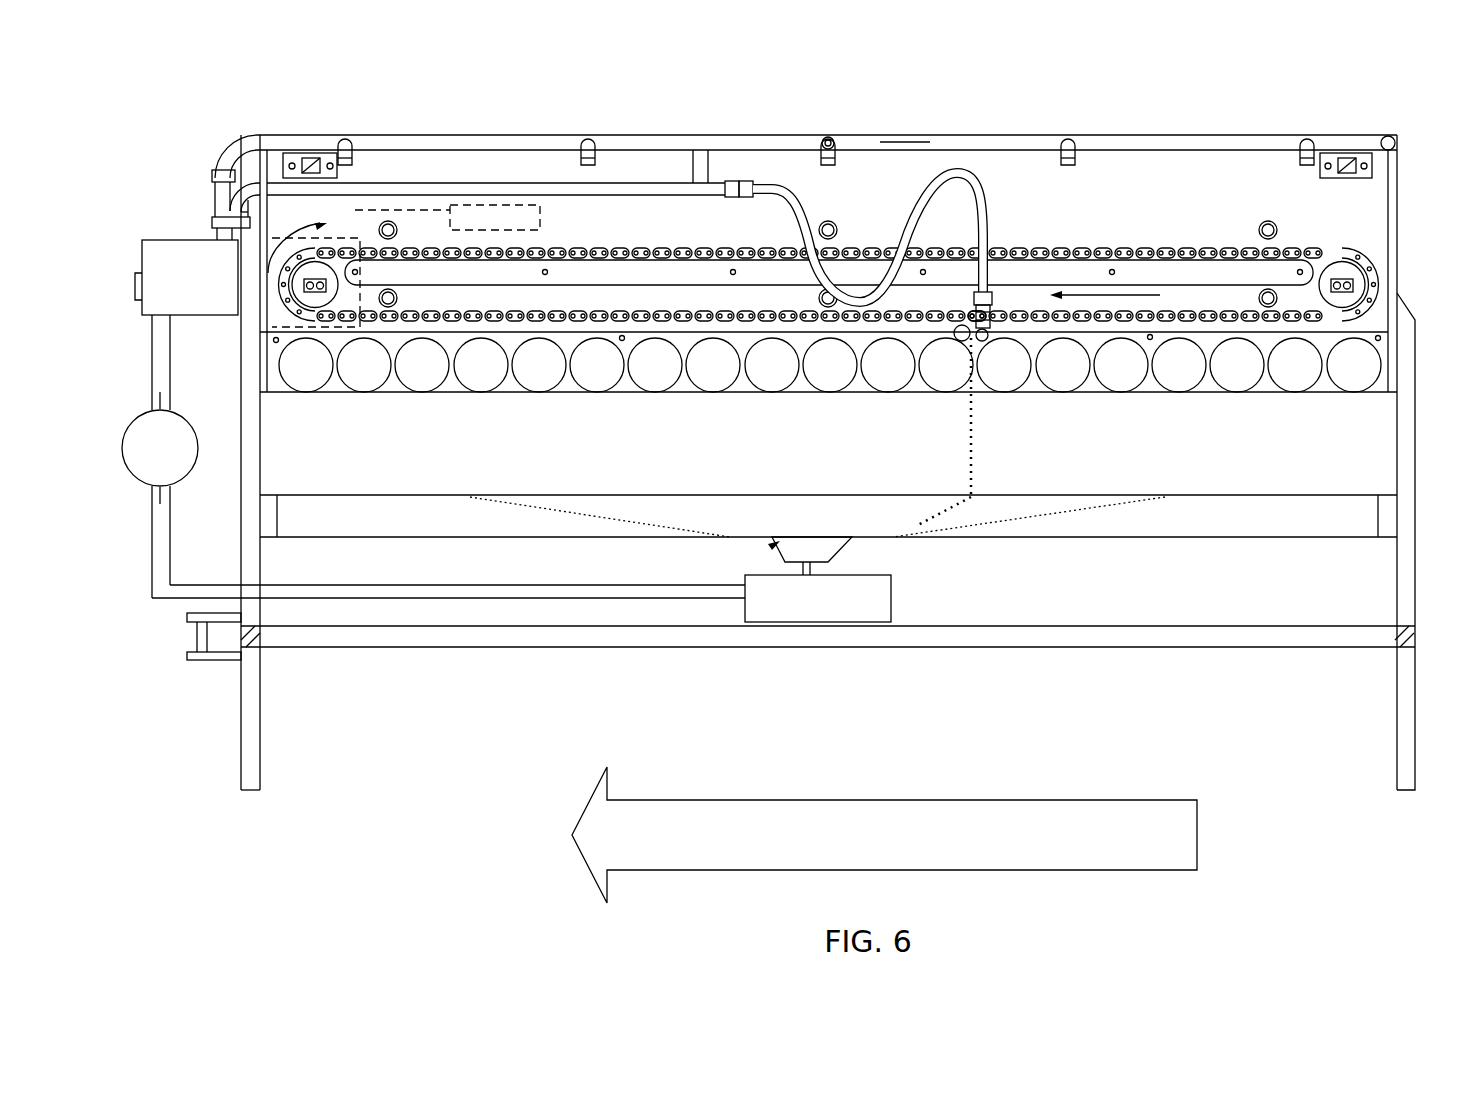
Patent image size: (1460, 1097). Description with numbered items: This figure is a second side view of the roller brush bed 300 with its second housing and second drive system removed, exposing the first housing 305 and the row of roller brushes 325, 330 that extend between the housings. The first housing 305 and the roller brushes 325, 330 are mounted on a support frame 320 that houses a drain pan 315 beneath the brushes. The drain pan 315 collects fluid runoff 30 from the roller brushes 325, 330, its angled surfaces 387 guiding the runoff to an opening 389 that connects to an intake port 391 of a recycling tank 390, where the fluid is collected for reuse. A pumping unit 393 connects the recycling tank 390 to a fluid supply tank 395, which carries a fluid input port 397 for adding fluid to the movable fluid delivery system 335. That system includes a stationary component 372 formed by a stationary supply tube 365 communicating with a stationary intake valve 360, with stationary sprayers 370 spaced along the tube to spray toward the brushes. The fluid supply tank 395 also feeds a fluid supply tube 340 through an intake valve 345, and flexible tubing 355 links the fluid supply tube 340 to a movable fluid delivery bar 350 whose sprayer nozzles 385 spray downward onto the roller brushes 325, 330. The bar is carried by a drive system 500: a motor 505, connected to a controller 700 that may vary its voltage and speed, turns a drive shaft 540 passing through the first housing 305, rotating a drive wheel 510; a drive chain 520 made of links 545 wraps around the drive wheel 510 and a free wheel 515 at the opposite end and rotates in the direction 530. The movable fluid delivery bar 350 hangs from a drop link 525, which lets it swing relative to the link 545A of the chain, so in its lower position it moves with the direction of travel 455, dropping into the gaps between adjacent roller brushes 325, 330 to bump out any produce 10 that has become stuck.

The roller brush bed 300 is at (262, 98).
The first housing 305 is at (690, 133).
The stationary supply tube 365 is at (470, 137).
The stationary component 372 is at (910, 136).
The stationary sprayers 370 is at (349, 158).
The fluid supply tube 340 is at (470, 183).
The drive system 500 is at (1230, 221).
The links 545 is at (530, 262).
The direction 530 is at (287, 227).
The drive shaft 540 is at (307, 287).
The drive wheel 510 is at (312, 300).
The drive chain 520 is at (1365, 292).
The free wheel 515 is at (1352, 294).
The motor 505 is at (293, 237).
The controller 700 is at (540, 222).
The flexible tubing 355 is at (913, 214).
The sprayer nozzles 385 is at (975, 306).
The movable fluid delivery bar 350 is at (988, 330).
The link 545A is at (992, 322).
The drop link 525 is at (986, 339).
The produce 10 is at (958, 338).
The fluid runoff 30 is at (982, 477).
The roller brushes 325 is at (306, 392).
The roller brushes 330 is at (364, 392).
The stationary intake valve 360 is at (214, 174).
The intake valve 345 is at (214, 228).
The movable fluid delivery system 335 is at (216, 126).
The fluid supply tank 395 is at (142, 242).
The fluid input port 397 is at (137, 284).
The pumping unit 393 is at (150, 487).
The support frame 320 is at (262, 494).
The drain pan 315 is at (272, 522).
The angled surfaces 387 is at (553, 516).
The opening 389 is at (774, 546).
The intake port 391 is at (848, 540).
The recycling tank 390 is at (891, 581).
The direction of travel 455 is at (570, 832).